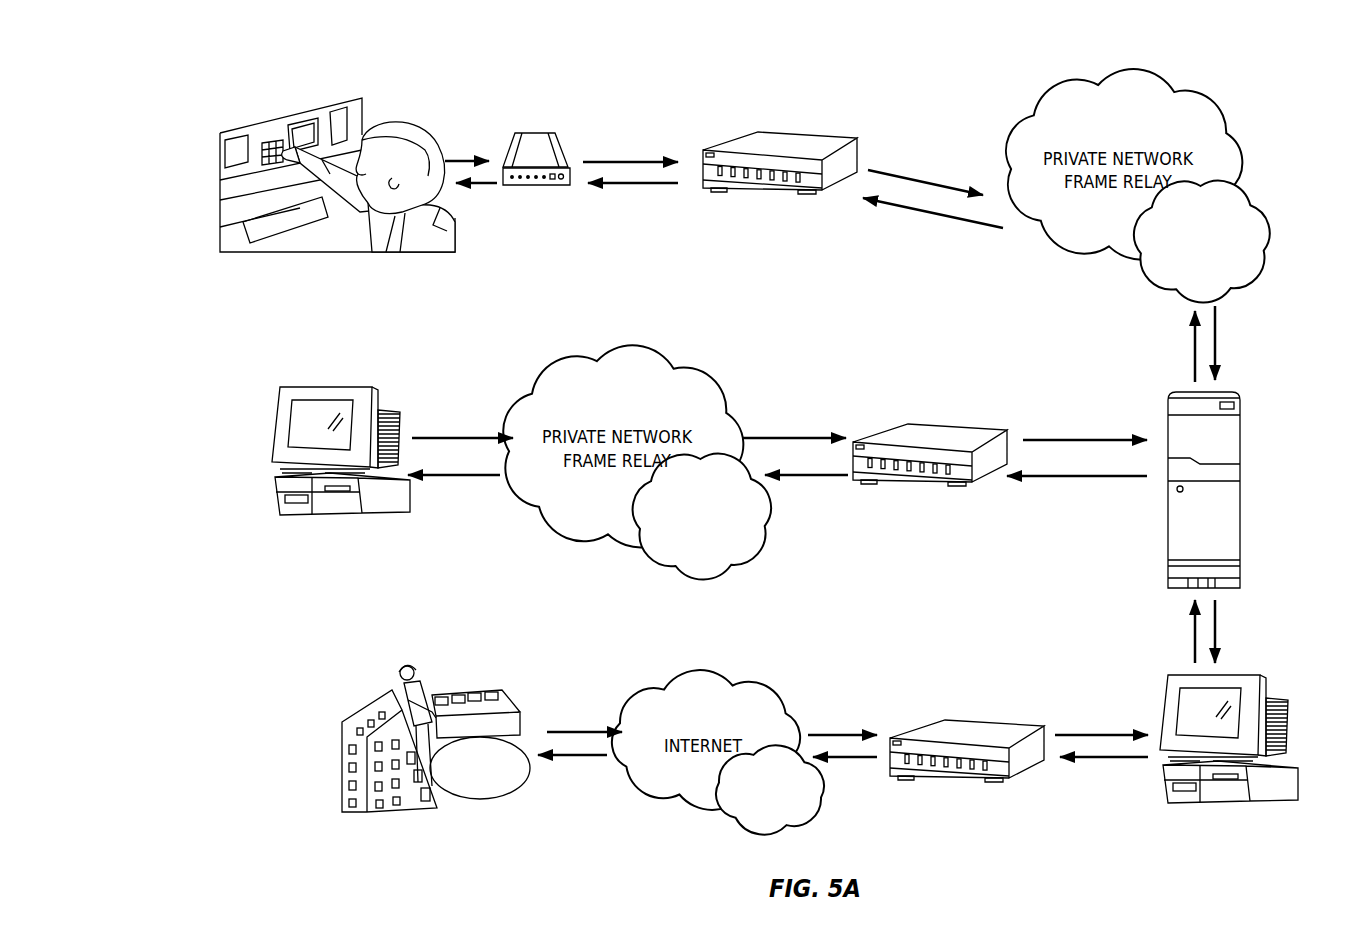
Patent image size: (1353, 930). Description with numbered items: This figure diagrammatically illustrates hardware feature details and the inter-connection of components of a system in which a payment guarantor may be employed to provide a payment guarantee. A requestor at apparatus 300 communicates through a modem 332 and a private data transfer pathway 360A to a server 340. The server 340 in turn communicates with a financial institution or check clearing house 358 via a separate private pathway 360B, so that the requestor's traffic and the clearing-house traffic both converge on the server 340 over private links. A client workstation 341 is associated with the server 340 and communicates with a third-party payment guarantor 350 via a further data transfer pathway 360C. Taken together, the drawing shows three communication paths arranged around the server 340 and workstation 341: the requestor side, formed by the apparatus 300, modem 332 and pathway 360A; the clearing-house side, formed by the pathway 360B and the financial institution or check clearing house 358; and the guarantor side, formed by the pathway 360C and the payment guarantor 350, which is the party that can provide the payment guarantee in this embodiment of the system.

The requestor apparatus 300 is at (366, 77).
The modem 332 is at (542, 134).
The private data transfer pathway 360A is at (678, 106).
The private pathway 360B is at (1125, 371).
The data transfer pathway 360C is at (1117, 665).
The server 340 is at (1240, 484).
The client workstation 341 is at (1275, 661).
The financial institution/check clearing house 358 is at (400, 397).
The third party payment guarantor 350 is at (521, 686).